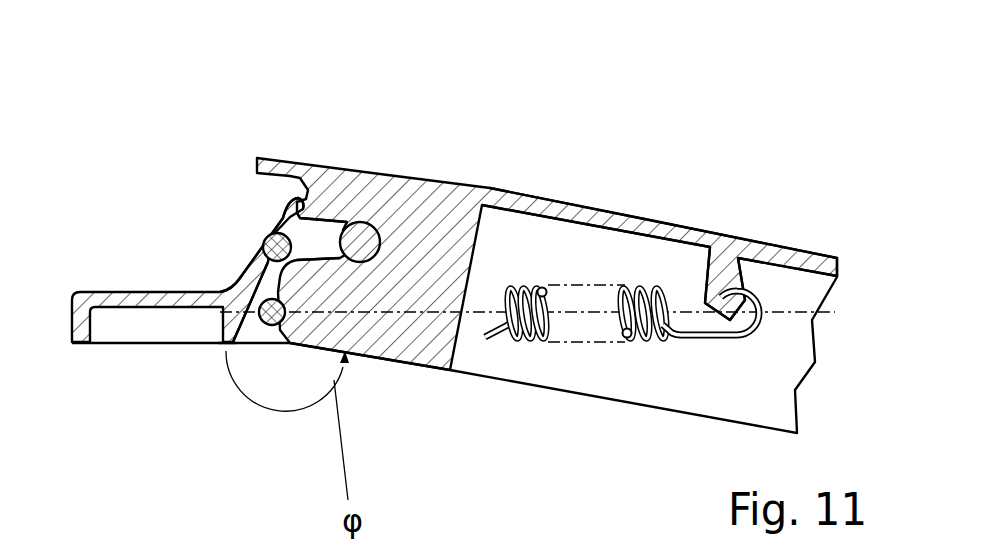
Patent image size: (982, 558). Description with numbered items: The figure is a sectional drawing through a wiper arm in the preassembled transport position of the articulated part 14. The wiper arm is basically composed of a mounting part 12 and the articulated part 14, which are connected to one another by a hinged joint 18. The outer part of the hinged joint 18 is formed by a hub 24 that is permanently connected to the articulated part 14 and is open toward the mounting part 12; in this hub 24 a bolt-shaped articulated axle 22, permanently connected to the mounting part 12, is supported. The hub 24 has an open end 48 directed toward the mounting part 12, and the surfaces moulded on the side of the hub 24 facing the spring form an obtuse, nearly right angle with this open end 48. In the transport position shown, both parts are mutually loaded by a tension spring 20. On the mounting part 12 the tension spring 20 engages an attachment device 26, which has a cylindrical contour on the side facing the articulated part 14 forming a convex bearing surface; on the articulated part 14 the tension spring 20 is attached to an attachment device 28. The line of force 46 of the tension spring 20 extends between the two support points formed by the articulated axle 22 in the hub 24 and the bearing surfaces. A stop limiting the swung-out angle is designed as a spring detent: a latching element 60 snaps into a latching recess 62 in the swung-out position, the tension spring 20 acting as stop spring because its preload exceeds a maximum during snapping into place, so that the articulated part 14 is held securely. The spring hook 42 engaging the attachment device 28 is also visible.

The mounting part 12 is at (95, 300).
The articulated part 14 is at (625, 222).
The hinged joint 18 is at (200, 213).
The tension spring 20 is at (679, 274).
The articulated axle 22 is at (427, 175).
The hub 24 is at (342, 212).
The attachment device 26 is at (272, 325).
The attachment device 28 is at (725, 302).
The spring hook 42 is at (755, 297).
The line of force 46 is at (415, 308).
The open end 48 is at (317, 240).
The latching element 60 is at (226, 350).
The latching recess 62 is at (302, 190).